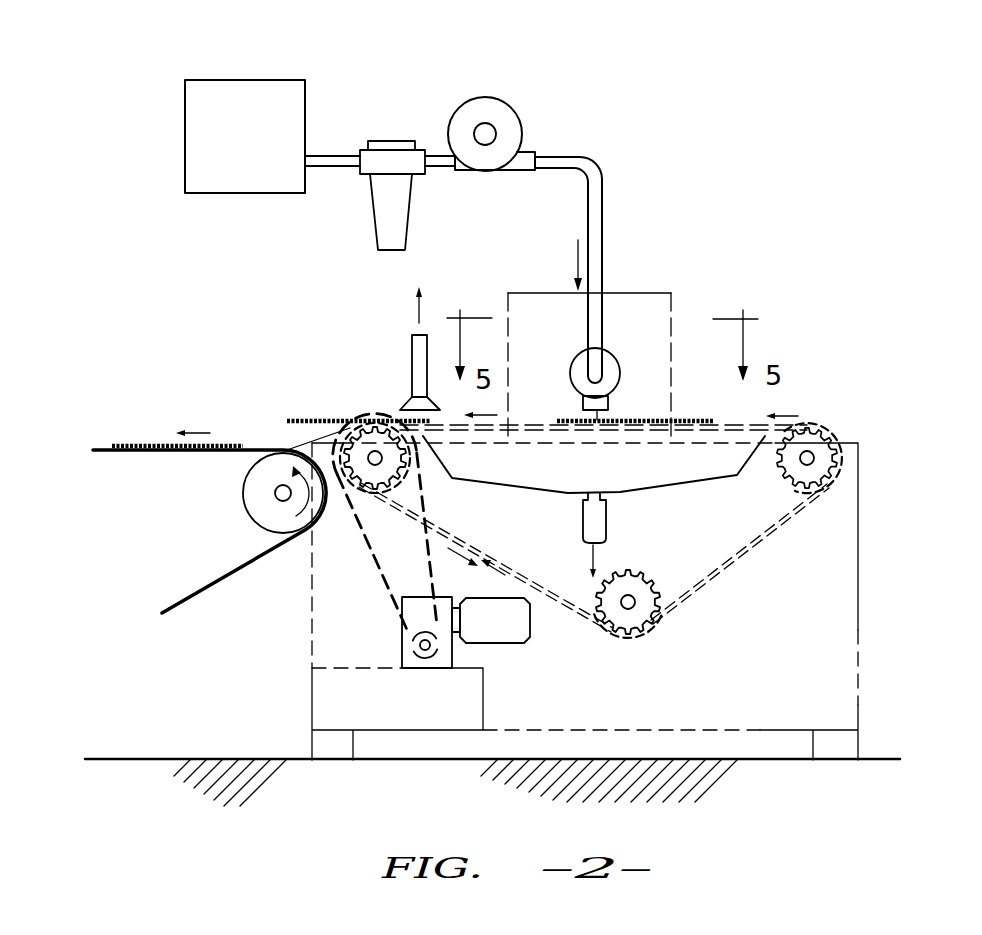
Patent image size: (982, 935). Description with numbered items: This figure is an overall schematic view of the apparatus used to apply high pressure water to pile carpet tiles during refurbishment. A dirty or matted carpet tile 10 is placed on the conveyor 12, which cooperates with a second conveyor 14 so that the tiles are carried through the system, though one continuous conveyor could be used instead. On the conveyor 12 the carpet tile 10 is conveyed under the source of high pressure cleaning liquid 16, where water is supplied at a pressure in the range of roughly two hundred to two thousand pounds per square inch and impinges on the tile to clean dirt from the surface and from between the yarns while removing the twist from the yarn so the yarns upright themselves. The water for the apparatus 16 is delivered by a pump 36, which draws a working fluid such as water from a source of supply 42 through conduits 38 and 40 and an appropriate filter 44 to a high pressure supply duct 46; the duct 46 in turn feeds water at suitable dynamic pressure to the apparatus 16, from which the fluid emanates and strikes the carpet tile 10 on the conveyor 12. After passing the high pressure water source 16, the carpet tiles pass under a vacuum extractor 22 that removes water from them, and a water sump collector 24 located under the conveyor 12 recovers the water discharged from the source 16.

The carpet tile 10 is at (143, 448).
The conveyor 12 is at (690, 593).
The conveyor 14 is at (153, 455).
The source of high pressure cleaning liquid 16 is at (650, 302).
The vacuum extractor 22 is at (411, 378).
The water sump collector 24 is at (640, 492).
The pump 36 is at (497, 97).
The conduit 38 is at (317, 155).
The conduit 40 is at (603, 223).
The source of supply 42 is at (237, 80).
The filter 44 is at (370, 200).
The high pressure supply duct 46 is at (570, 373).